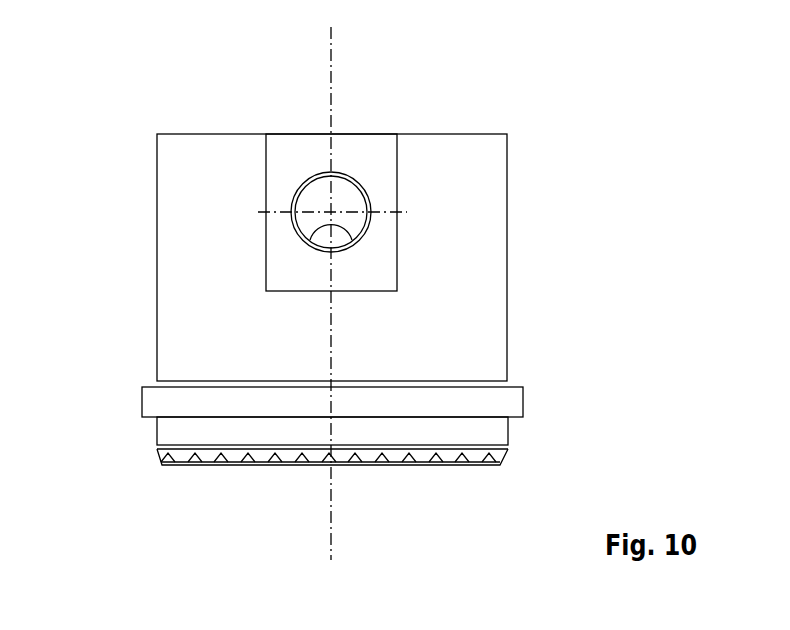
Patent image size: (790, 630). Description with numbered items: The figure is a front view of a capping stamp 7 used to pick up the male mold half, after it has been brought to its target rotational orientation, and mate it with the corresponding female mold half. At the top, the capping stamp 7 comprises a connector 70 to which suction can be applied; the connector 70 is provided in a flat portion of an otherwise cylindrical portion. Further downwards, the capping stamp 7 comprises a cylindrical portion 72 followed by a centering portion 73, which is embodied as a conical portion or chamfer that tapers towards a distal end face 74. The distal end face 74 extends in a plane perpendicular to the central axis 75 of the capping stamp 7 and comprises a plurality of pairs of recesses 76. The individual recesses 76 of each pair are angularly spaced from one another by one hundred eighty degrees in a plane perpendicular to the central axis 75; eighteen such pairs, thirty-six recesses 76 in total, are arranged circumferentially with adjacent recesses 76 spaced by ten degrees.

The capping stamp 7 is at (583, 170).
The connector 70 is at (316, 195).
The cylindrical portion 72 is at (157, 430).
The centering portion 73 is at (490, 448).
The distal end face 74 is at (212, 465).
The central axis 75 is at (330, 83).
The recesses 76 is at (332, 463).